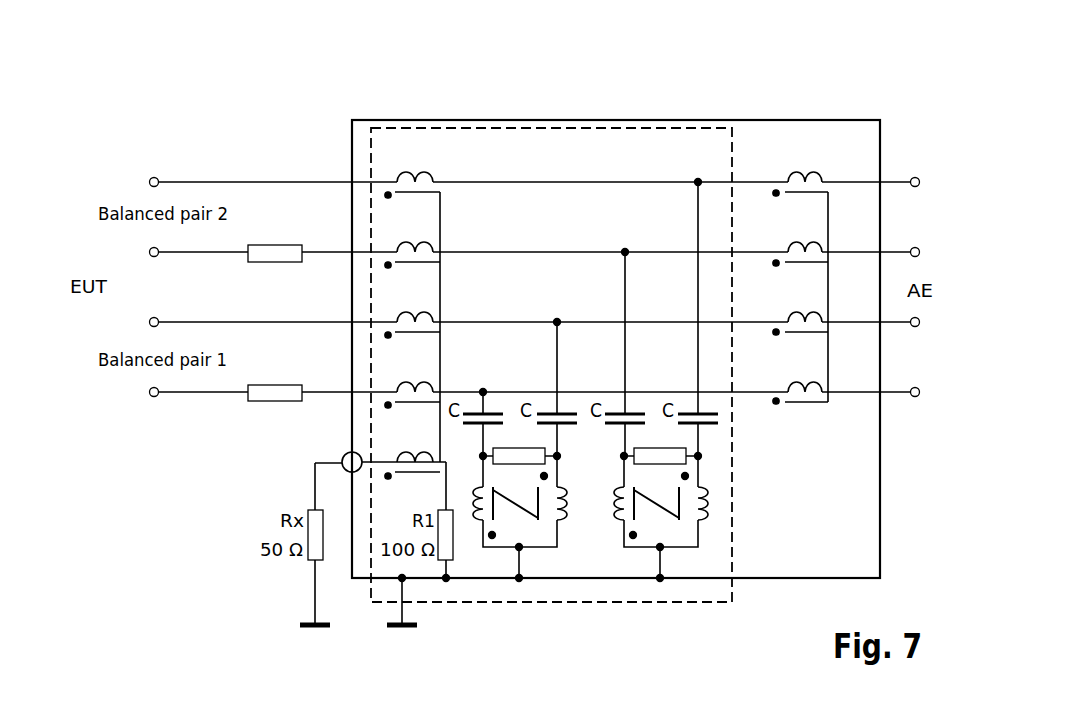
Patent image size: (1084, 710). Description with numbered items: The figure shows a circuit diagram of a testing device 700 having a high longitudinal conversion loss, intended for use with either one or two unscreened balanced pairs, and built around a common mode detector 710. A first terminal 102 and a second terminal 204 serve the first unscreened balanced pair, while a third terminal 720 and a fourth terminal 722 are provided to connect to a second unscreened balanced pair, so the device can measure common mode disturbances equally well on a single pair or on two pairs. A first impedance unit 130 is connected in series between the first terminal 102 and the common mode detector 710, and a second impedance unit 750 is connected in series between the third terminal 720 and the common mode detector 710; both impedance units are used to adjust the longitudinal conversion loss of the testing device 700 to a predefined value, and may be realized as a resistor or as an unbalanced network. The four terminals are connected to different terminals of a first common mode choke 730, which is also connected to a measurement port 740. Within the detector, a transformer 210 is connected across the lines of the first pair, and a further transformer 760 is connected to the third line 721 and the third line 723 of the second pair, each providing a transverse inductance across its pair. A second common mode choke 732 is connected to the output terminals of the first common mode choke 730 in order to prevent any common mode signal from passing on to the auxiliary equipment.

The testing device 700 is at (296, 88).
The common mode detector 710 is at (665, 127).
The third terminal 720 is at (148, 252).
The third line 721 is at (205, 255).
The fourth terminal 722 is at (155, 177).
The third line 723 is at (240, 180).
The first common mode choke 730 is at (396, 178).
The second common mode choke 732 is at (823, 178).
The measurement port 740 is at (341, 455).
The second impedance unit 750 is at (277, 244).
The first impedance unit 130 is at (277, 384).
The first terminal 102 is at (148, 392).
The second terminal 204 is at (148, 322).
The transformer 210 is at (540, 550).
The further transformer 760 is at (680, 550).